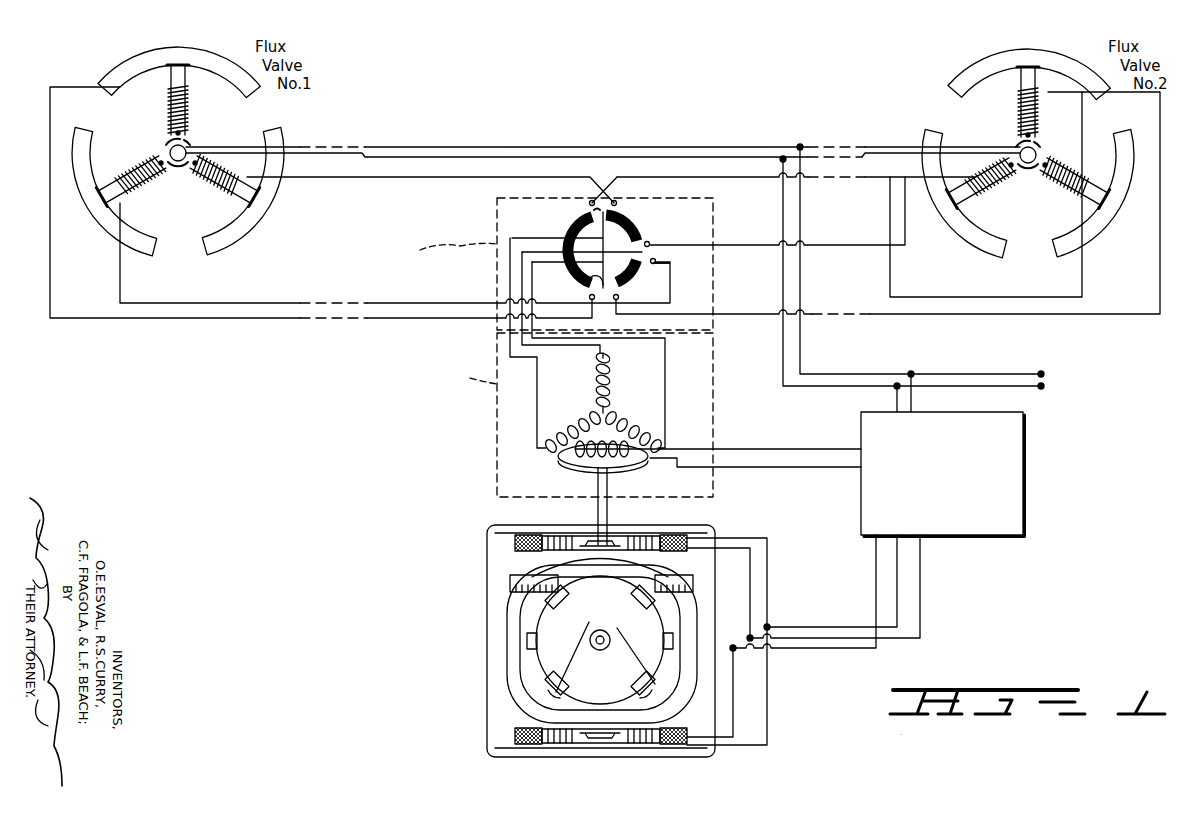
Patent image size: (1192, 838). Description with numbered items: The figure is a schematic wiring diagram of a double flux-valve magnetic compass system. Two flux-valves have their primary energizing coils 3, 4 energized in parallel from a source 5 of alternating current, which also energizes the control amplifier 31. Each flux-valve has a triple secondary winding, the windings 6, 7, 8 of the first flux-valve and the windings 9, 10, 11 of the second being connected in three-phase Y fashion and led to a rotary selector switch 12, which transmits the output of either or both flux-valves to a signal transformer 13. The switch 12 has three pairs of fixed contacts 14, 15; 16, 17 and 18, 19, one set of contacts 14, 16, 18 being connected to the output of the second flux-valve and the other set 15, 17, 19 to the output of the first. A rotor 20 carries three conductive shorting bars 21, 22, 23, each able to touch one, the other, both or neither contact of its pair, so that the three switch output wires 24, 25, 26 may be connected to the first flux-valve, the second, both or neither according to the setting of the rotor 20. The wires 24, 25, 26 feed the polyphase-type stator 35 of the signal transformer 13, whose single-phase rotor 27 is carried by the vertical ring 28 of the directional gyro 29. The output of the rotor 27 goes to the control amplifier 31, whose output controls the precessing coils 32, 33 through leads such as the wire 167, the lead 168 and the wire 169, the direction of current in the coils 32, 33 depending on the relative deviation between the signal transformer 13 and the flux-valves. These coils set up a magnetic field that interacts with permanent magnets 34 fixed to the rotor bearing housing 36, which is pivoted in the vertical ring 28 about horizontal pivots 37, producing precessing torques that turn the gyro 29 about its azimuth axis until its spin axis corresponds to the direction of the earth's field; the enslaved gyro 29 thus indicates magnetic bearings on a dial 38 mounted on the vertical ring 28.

The primary energizing coil 3 is at (184, 147).
The primary energizing coil 4 is at (1042, 150).
The source of alternating current 5 is at (1038, 389).
The secondary winding 6 is at (168, 105).
The secondary winding 7 is at (135, 170).
The secondary winding 8 is at (210, 192).
The secondary winding 9 is at (1040, 107).
The secondary winding 10 is at (989, 192).
The secondary winding 11 is at (1044, 192).
The rotary selector switch 12 is at (497, 210).
The signal transformer 13 is at (497, 428).
The fixed contact 14 is at (590, 201).
The fixed contact 15 is at (617, 201).
The fixed contact 16 is at (650, 244).
The fixed contact 17 is at (653, 265).
The fixed contact 18 is at (618, 298).
The fixed contact 19 is at (588, 297).
The rotor 20 is at (628, 232).
The conductive shorting bar 21 is at (595, 210).
The conductive shorting bar 22 is at (655, 261).
The conductive shorting bar 23 is at (586, 279).
The switch output wire 24 is at (520, 254).
The switch output wire 25 is at (530, 264).
The switch output wire 26 is at (510, 240).
The single-phase rotor 27 is at (559, 462).
The vertical ring 28 is at (505, 600).
The directional gyro 29 is at (525, 665).
The control amplifier 31 is at (1025, 485).
The precessing coil 32 is at (668, 545).
The precessing coil 33 is at (672, 745).
The permanent magnet 34 is at (642, 599).
The polyphase-type stator 35 is at (610, 385).
The rotor bearing housing 36 is at (535, 632).
The horizontal pivot 37 is at (552, 682).
The dial 38 is at (690, 576).
The wire 167 is at (876, 558).
The amplifier output lead 168 is at (897, 576).
The wire 169 is at (920, 591).